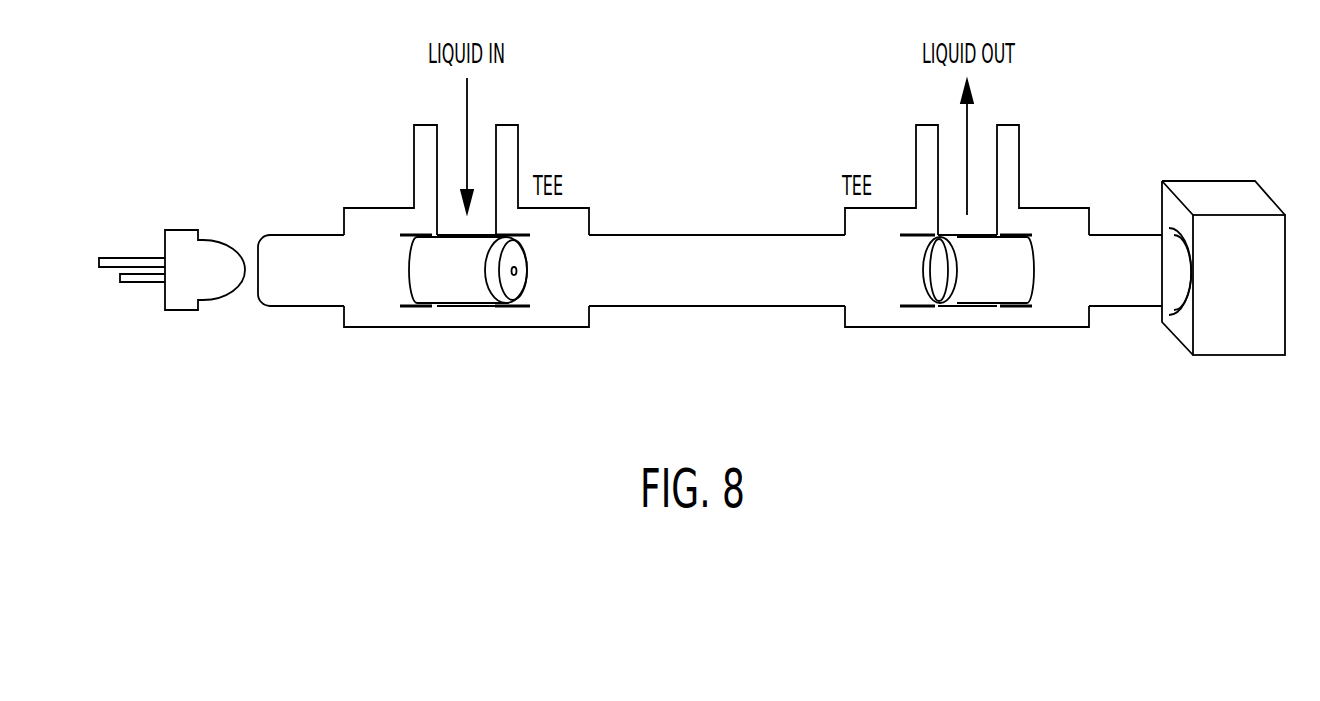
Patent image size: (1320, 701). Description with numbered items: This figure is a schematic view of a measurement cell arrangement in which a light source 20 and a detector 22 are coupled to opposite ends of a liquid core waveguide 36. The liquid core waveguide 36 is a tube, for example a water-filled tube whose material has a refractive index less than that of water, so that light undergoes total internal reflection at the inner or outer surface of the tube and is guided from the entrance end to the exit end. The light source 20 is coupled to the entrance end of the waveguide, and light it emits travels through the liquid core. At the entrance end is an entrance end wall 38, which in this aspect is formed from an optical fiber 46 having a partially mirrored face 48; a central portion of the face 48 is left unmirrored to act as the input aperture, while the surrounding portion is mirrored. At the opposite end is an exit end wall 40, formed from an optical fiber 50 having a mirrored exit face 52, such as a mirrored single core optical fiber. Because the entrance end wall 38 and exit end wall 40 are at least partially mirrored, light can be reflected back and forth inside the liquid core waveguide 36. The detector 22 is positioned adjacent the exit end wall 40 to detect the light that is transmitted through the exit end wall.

The light source 20 is at (180, 204).
The detector 22 is at (1218, 181).
The liquid core waveguide 36 is at (708, 364).
The entrance end wall 38 is at (517, 290).
The exit end wall 40 is at (938, 282).
The optical fiber 46 is at (290, 364).
The partially mirrored face 48 is at (513, 257).
The optical fiber 50 is at (1138, 362).
The mirrored exit face 52 is at (937, 252).